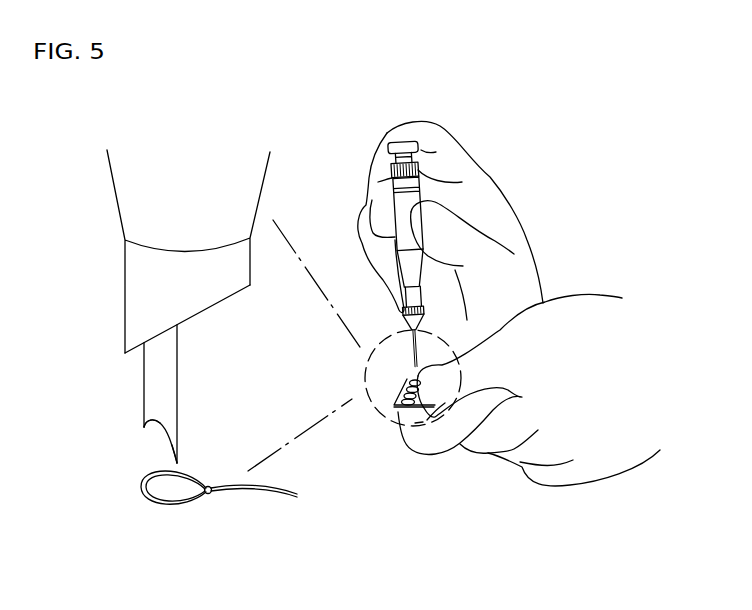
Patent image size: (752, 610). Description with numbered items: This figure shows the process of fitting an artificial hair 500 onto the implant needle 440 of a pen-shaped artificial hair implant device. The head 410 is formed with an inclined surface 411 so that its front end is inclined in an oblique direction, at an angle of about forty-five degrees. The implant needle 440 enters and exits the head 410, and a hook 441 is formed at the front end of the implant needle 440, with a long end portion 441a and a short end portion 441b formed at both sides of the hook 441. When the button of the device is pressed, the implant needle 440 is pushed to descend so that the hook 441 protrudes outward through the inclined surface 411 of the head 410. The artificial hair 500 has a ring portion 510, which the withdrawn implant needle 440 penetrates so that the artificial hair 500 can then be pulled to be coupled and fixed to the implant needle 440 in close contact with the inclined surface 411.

The head 410 is at (122, 210).
The inclined surface 411 is at (210, 309).
The implant needle 440 is at (150, 378).
The hook 441 is at (158, 426).
The long end portion 441a is at (181, 463).
The short end portion 441b is at (146, 430).
The artificial hair 500 is at (245, 497).
The ring portion 510 is at (173, 510).